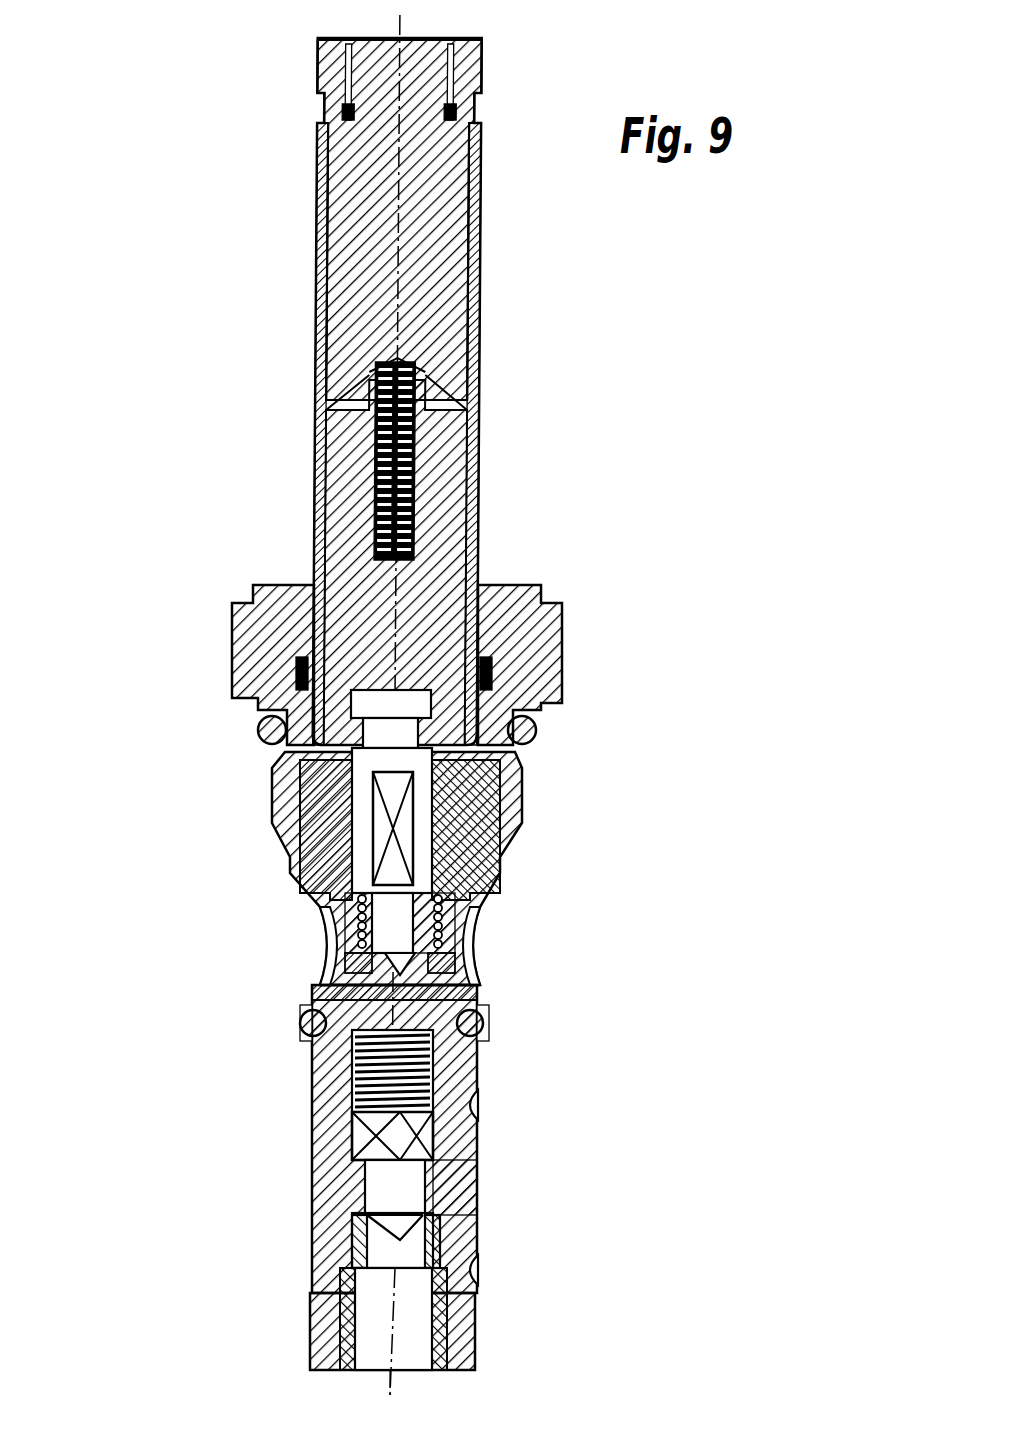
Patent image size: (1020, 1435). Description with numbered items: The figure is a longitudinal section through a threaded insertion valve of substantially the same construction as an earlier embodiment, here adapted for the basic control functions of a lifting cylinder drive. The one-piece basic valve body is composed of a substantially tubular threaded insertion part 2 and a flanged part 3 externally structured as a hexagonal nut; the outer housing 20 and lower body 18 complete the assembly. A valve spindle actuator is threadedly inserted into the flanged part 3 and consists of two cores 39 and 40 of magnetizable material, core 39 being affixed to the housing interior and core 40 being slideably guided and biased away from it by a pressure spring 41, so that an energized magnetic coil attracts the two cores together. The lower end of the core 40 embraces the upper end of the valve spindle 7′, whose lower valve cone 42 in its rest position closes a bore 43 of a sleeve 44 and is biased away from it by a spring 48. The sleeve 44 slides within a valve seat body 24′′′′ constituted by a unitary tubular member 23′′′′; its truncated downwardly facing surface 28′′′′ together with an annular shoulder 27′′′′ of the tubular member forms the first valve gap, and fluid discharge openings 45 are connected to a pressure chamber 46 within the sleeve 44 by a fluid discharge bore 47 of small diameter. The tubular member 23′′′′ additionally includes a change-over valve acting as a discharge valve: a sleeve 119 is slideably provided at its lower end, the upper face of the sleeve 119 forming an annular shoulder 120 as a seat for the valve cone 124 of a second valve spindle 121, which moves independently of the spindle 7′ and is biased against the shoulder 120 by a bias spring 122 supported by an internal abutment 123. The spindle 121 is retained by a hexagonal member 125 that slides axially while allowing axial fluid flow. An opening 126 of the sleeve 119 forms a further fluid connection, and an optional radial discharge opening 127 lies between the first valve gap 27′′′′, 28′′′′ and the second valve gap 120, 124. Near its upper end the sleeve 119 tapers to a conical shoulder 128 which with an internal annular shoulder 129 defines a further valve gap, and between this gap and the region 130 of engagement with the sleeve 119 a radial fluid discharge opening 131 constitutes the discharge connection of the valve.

The threaded insertion part 2 is at (508, 807).
The flanged part 3 is at (542, 655).
The valve spindle 7′ is at (370, 705).
The lower body 18 is at (478, 1048).
The sleeve 20 is at (482, 238).
The tubular member 23′′′′ is at (478, 1165).
The valve assembly 24′′′′ is at (680, 1141).
The annular shoulder 27′′′′ is at (308, 998).
The truncated downwardly facing surface 28′′′′ is at (312, 972).
The core 39 is at (353, 257).
The core 40 is at (327, 470).
The pressure spring 41 is at (422, 387).
The valve cone 42 is at (478, 948).
The bore 43 is at (478, 990).
The sleeve 44 is at (290, 815).
The fluid discharge openings 45 is at (467, 927).
The pressure chamber 46 is at (310, 903).
The fluid discharge bore 47 is at (472, 943).
The spring 48 is at (330, 936).
The sleeve 119 is at (312, 1310).
The annular shoulder 120 is at (312, 1225).
The second valve spindle 121 is at (373, 1177).
The bias spring 122 is at (312, 1068).
The internal abutment 123 is at (478, 1013).
The valve cone 124 is at (478, 1213).
The hexagonal member 125 is at (312, 1135).
The opening 126 is at (410, 1352).
The radial discharge opening 127 is at (478, 1103).
The conical shoulder 128 is at (312, 1258).
The internal annular shoulder 129 is at (478, 1222).
The region of engagement 130 is at (478, 1320).
The radial fluid discharge opening 131 is at (447, 1272).